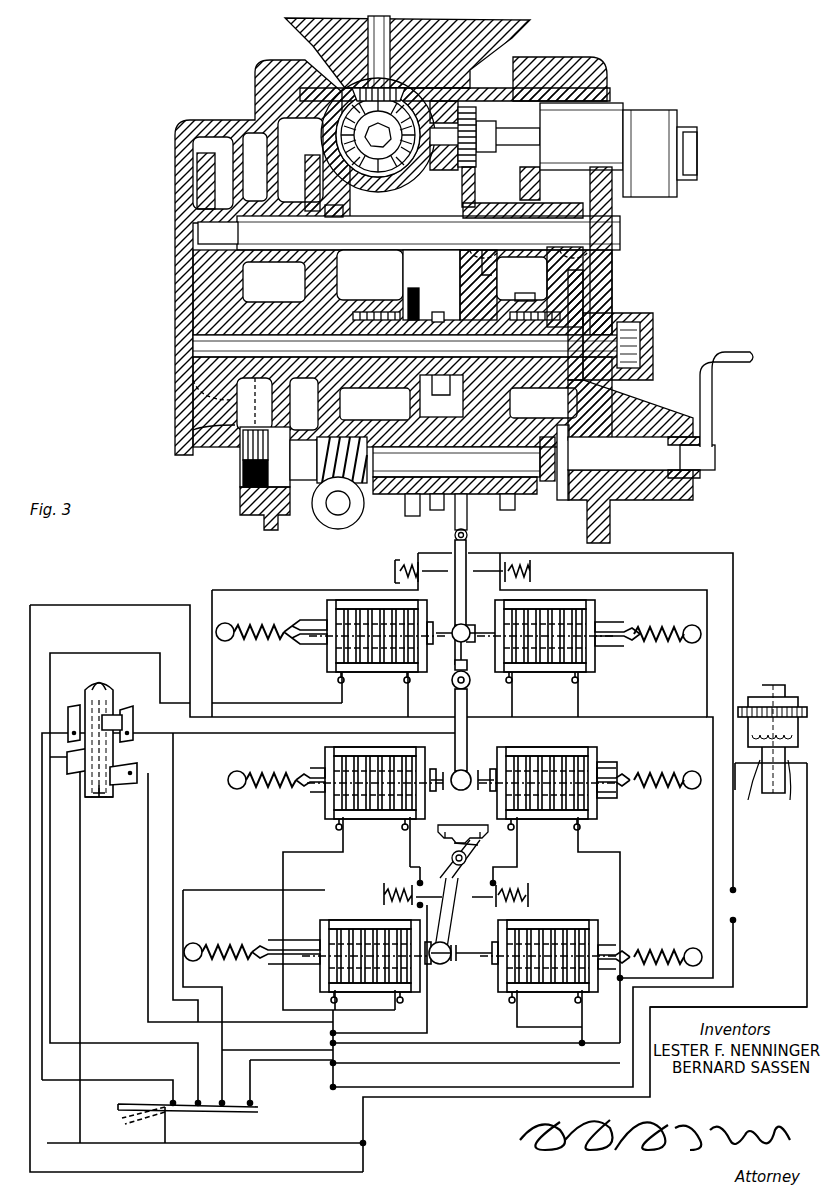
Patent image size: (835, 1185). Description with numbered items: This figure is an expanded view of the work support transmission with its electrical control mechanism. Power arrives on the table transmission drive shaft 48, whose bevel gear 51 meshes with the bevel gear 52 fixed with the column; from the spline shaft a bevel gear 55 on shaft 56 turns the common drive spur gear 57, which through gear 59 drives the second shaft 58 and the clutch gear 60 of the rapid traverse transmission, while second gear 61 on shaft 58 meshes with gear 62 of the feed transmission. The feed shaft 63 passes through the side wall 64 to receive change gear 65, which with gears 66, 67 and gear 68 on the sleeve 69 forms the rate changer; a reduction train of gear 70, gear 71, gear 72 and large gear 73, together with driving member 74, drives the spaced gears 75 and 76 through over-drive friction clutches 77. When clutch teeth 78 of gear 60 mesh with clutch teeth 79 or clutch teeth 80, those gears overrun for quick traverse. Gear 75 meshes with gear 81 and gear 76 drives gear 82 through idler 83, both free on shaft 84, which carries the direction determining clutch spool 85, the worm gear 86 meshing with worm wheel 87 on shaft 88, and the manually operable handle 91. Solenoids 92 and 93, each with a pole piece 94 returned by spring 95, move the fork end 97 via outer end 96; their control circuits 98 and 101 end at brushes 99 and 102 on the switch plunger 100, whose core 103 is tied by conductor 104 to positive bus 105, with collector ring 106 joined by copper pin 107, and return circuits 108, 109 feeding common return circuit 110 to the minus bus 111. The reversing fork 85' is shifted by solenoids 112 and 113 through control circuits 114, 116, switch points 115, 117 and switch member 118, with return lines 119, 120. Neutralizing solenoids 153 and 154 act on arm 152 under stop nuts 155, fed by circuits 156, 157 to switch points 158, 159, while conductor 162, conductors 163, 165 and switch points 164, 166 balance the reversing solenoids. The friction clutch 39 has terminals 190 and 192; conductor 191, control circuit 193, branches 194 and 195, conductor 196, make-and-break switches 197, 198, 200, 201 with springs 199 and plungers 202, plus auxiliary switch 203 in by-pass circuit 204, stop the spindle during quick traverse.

The table transmission drive shaft 48 is at (388, 38).
The bevel gear 51 is at (428, 72).
The bevel gear 52 is at (338, 128).
The bevel gear 55 is at (430, 85).
The shaft 56 is at (505, 145).
The spur gear 57 is at (480, 120).
The second shaft 58 is at (405, 232).
The gear 59 is at (478, 186).
The clutch gear 60 is at (476, 308).
The second gear 61 is at (598, 275).
The gear 62 is at (588, 292).
The shaft 63 is at (642, 340).
The side wall 64 is at (242, 447).
The change gear 65 is at (200, 388).
The gear 66 is at (202, 190).
The gear 67 is at (211, 172).
The gear 68 is at (205, 412).
The sleeve 69 is at (310, 395).
The gear 70 is at (305, 380).
The gear 71 is at (306, 180).
The gear 72 is at (342, 212).
The large gear 73 is at (332, 292).
The driving member 74 is at (554, 305).
The gear 75 is at (404, 285).
The gear 76 is at (523, 289).
The over-drive friction clutches 77 is at (402, 402).
The clutch teeth 78 is at (438, 312).
The clutch teeth 79 is at (416, 306).
The clutch teeth 80 is at (410, 347).
The gear 81 is at (410, 508).
The gear 82 is at (508, 512).
The idler 83 is at (500, 398).
The shaft 84 is at (492, 470).
The direction determining clutch spool 85 is at (437, 509).
The pivoted shifter fork 85' is at (463, 648).
The worm gear 86 is at (318, 480).
The worm wheel 87 is at (337, 516).
The shaft 88 is at (333, 510).
The manually operable handle 91 is at (712, 400).
The solenoid 92 is at (364, 925).
The solenoid 93 is at (534, 925).
The pole piece 94 is at (304, 625).
The spring 95 is at (262, 624).
The outer end of pole piece 96 is at (458, 948).
The end of shifter fork 97 is at (443, 966).
The control circuit 98 is at (148, 952).
The brush 99 is at (115, 780).
The switch plunger 100 is at (95, 690).
The control circuit 101 is at (472, 1043).
The brush 102 is at (76, 770).
The metal electrical conducting core 103 is at (108, 800).
The conductor 104 is at (80, 921).
The positive bus 105 is at (68, 1135).
The collector ring 106 is at (120, 768).
The copper pin 107 is at (112, 756).
The return circuit 108 is at (226, 805).
The return circuit 109 is at (558, 1021).
The common return circuit 110 is at (162, 605).
The minus bus 111 is at (92, 1172).
The solenoid 112 is at (360, 605).
The solenoid 113 is at (545, 606).
The control circuit 114 is at (270, 703).
The switch point 115 is at (68, 718).
The control circuit 116 is at (512, 720).
The switch point 117 is at (126, 712).
The radially extending switch member 118 is at (108, 690).
The return line 119 is at (396, 691).
The return line 120 is at (588, 691).
The second integral arm 152 is at (465, 766).
The neutralizing solenoid 153 is at (360, 755).
The neutralizing solenoid 154 is at (565, 756).
The stop nut 155 is at (314, 800).
The control circuit 156 is at (214, 890).
The control circuit 157 is at (612, 852).
The switch point 158 is at (223, 1101).
The switch point 159 is at (251, 1101).
The conductor 162 is at (166, 1130).
The conductor 163 is at (46, 915).
The switch point 164 is at (173, 1100).
The conductor 165 is at (168, 792).
The switch point 166 is at (199, 1100).
The terminal 190 is at (786, 790).
The conductor 191 is at (690, 1012).
The terminal 192 is at (749, 789).
The control circuit 193 is at (692, 553).
The branch 194 is at (315, 635).
The branch 195 is at (707, 694).
The single conductor 196 is at (425, 1030).
The make-and-break switch 197 is at (452, 540).
The make-and-break switch 198 is at (404, 884).
The spring 199 is at (398, 575).
The make-and-break switch 200 is at (513, 562).
The make-and-break switch 201 is at (500, 885).
The plunger 202 is at (424, 568).
The auxiliary switch 203 is at (736, 918).
The by-pass circuit 204 is at (735, 838).
The electrically operated friction clutch 39 is at (798, 735).